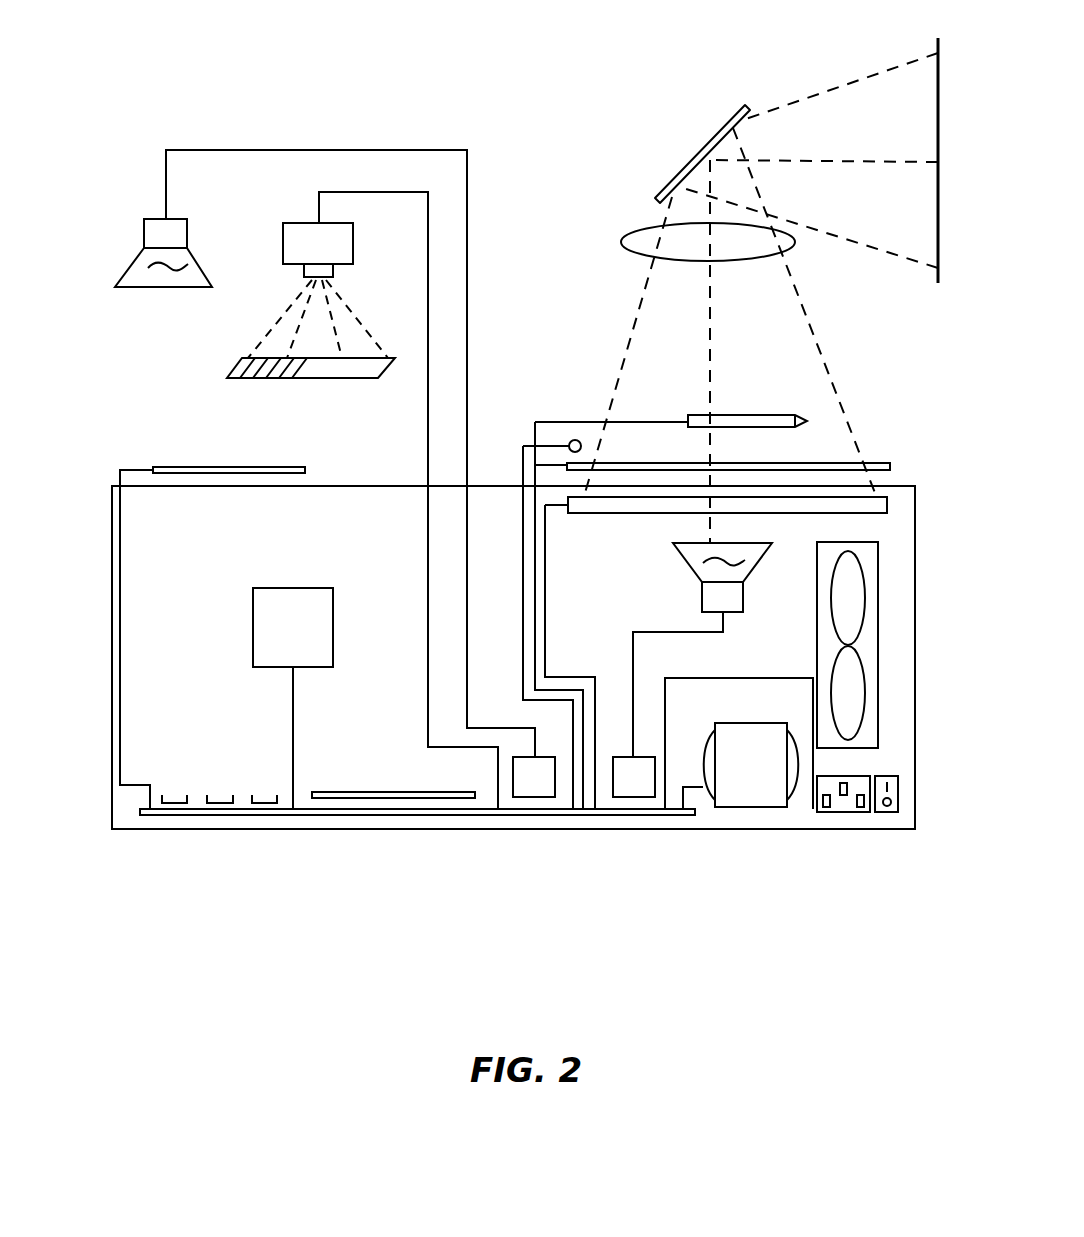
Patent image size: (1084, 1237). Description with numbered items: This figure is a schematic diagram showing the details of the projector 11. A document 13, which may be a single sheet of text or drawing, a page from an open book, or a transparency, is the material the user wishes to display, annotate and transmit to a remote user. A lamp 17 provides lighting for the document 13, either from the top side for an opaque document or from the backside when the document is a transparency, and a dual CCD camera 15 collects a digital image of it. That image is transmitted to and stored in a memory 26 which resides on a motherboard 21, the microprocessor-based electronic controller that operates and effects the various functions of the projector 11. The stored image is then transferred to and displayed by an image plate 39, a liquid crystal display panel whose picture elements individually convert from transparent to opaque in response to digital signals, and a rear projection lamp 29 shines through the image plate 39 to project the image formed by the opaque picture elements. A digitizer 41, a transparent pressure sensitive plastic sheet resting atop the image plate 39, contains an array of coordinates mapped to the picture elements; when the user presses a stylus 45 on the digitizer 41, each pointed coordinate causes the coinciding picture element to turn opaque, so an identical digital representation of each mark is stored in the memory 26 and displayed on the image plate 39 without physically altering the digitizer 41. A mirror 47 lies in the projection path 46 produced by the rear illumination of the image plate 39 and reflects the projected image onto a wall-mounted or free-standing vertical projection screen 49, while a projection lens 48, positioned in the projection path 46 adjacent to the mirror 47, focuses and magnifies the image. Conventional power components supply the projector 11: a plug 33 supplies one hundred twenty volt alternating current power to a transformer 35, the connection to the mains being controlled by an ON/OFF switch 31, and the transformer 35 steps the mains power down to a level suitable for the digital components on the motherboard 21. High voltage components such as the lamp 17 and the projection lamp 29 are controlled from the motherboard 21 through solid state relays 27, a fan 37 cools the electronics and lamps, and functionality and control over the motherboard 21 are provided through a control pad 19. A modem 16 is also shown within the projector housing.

The projector 11 is at (290, 913).
The document 13 is at (303, 380).
The dual CCD camera 15 is at (283, 235).
The modem 16 is at (333, 606).
The lamp 17 is at (158, 292).
The control pad 19 is at (165, 466).
The motherboard 21 is at (450, 816).
The memory 26 is at (397, 800).
The solid state relays 27 is at (538, 797).
The rear projection lamp 29 is at (687, 560).
The ON/OFF switch 31 is at (890, 812).
The plug 33 is at (842, 812).
The transformer 35 is at (772, 809).
The fan 37 is at (817, 607).
The image plate 39 is at (887, 495).
The digitizer 41 is at (880, 462).
The stylus 45 is at (797, 413).
The projection path 46 is at (712, 366).
The mirror 47 is at (708, 140).
The projection lens 48 is at (622, 240).
The projection screen 49 is at (936, 96).